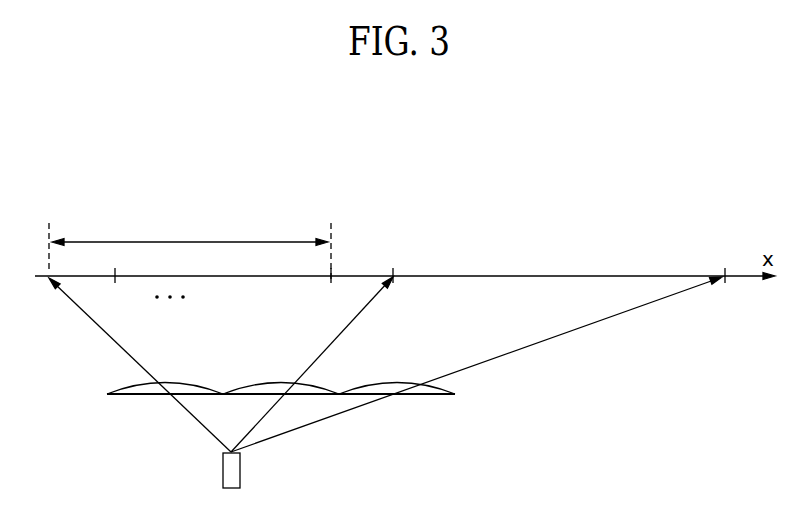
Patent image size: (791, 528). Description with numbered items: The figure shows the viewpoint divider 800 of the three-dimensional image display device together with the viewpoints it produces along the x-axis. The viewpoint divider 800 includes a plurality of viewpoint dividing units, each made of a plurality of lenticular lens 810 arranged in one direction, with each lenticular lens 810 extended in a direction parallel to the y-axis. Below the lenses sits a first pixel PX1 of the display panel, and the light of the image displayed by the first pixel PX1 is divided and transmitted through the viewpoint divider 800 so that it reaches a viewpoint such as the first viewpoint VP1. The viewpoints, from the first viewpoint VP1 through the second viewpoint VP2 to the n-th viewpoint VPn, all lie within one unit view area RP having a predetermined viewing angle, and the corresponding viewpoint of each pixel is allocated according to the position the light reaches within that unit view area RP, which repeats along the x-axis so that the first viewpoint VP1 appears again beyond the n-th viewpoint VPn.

The viewpoint divider 800 is at (252, 420).
The lenticular lens 810 is at (153, 394).
The first pixel PX1 is at (241, 470).
The first viewpoint VP1 is at (48, 279).
The second viewpoint VP2 is at (120, 291).
The n-th viewpoint VPn is at (328, 291).
The unit view area RP is at (190, 247).